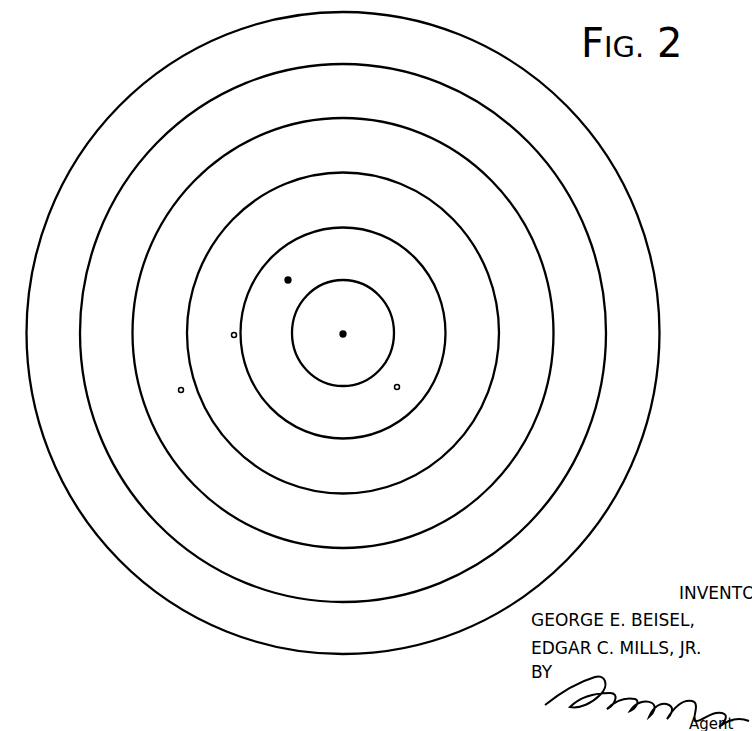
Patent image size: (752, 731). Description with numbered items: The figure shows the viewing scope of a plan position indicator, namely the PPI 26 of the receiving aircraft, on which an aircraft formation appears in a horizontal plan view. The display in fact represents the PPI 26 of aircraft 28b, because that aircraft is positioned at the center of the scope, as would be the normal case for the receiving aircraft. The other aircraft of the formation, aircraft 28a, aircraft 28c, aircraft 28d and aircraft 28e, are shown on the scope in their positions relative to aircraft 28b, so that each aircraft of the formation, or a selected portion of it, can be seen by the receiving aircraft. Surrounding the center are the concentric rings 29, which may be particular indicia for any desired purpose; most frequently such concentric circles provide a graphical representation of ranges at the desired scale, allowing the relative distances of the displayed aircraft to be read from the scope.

The PPI 26 is at (648, 182).
The aircraft 28a is at (290, 279).
The aircraft 28b is at (343, 332).
The aircraft 28c is at (395, 388).
The aircraft 28d is at (234, 333).
The aircraft 28e is at (181, 393).
The concentric rings 29 is at (78, 340).